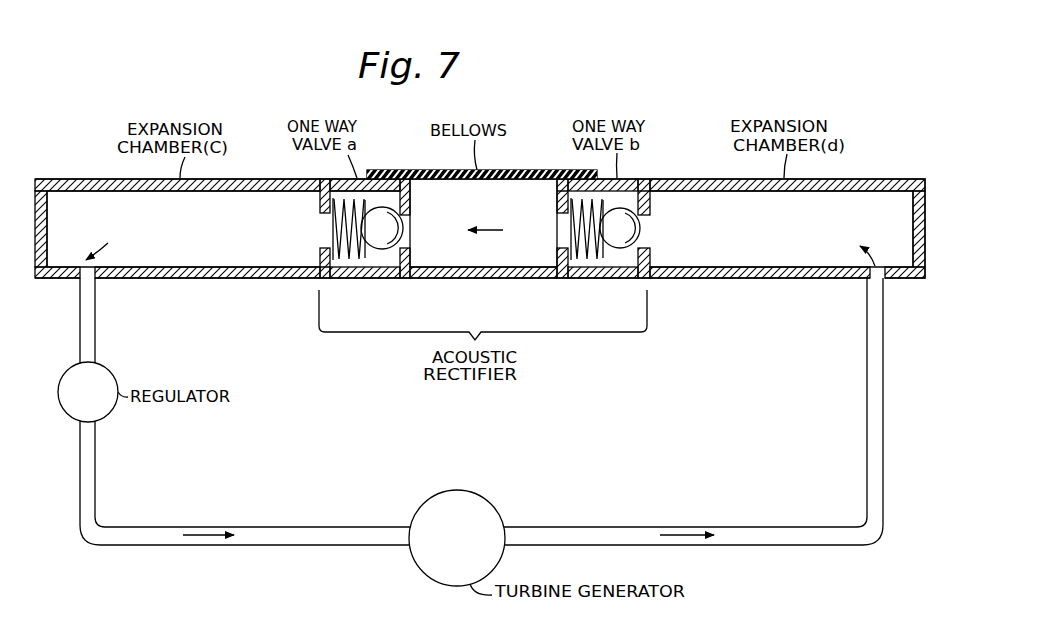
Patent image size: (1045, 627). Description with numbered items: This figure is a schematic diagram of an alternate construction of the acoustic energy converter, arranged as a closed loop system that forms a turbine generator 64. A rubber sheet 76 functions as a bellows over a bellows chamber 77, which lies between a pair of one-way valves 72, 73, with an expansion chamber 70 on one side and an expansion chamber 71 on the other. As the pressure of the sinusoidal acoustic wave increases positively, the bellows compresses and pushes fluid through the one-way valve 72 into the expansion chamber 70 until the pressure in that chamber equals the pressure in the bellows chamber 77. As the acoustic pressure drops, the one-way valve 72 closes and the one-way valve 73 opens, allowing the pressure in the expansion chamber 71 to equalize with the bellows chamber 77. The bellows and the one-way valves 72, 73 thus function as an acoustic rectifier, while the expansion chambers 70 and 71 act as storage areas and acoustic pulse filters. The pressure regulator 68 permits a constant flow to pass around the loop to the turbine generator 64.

The expansion chamber 70 is at (196, 239).
The expansion chamber 71 is at (765, 239).
The one-way valve 72 is at (378, 260).
The one-way valve 73 is at (607, 258).
The rubber sheet 76 is at (519, 170).
The bellows chamber 77 is at (517, 243).
The regulator 68 is at (96, 405).
The turbine generator 64 is at (466, 551).